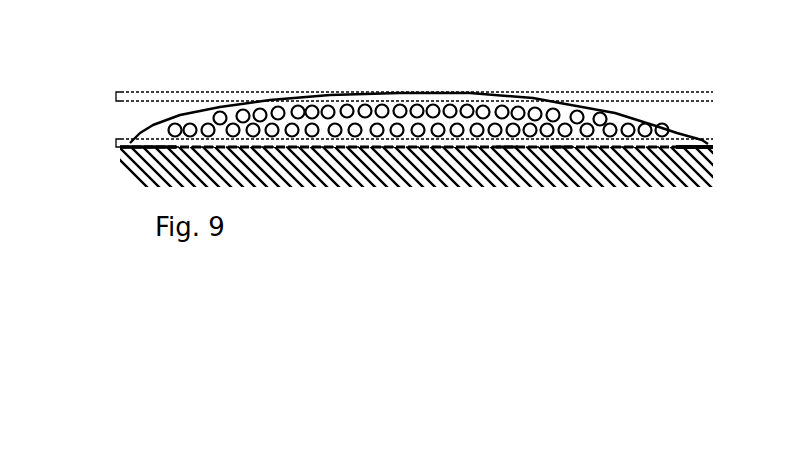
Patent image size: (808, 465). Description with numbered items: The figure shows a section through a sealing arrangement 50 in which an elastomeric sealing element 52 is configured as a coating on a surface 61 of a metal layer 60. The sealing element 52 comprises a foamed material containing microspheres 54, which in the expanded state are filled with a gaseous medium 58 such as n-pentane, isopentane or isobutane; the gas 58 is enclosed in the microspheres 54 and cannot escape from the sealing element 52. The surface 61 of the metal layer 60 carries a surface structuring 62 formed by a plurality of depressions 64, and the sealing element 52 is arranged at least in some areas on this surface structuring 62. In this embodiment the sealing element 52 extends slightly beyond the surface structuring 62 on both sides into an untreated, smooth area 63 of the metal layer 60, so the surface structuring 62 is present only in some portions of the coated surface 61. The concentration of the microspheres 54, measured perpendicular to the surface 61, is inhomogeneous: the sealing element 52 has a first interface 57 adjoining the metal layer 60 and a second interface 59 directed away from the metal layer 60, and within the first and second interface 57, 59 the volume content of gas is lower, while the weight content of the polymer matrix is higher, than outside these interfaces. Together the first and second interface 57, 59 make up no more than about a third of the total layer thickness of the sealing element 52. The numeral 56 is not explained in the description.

The sealing arrangement 50 is at (417, 89).
The elastomeric sealing element 52 is at (615, 113).
The microspheres 54 is at (347, 105).
The particle 56 is at (242, 110).
The first interface 57 is at (116, 143).
The gaseous medium 58 is at (190, 124).
The second interface 59 is at (116, 96).
The metal layer 60 is at (592, 177).
The surface 61 is at (385, 144).
The surface structuring 62 is at (561, 146).
The untreated, smooth area 63 is at (700, 140).
The depressions 64 is at (508, 145).